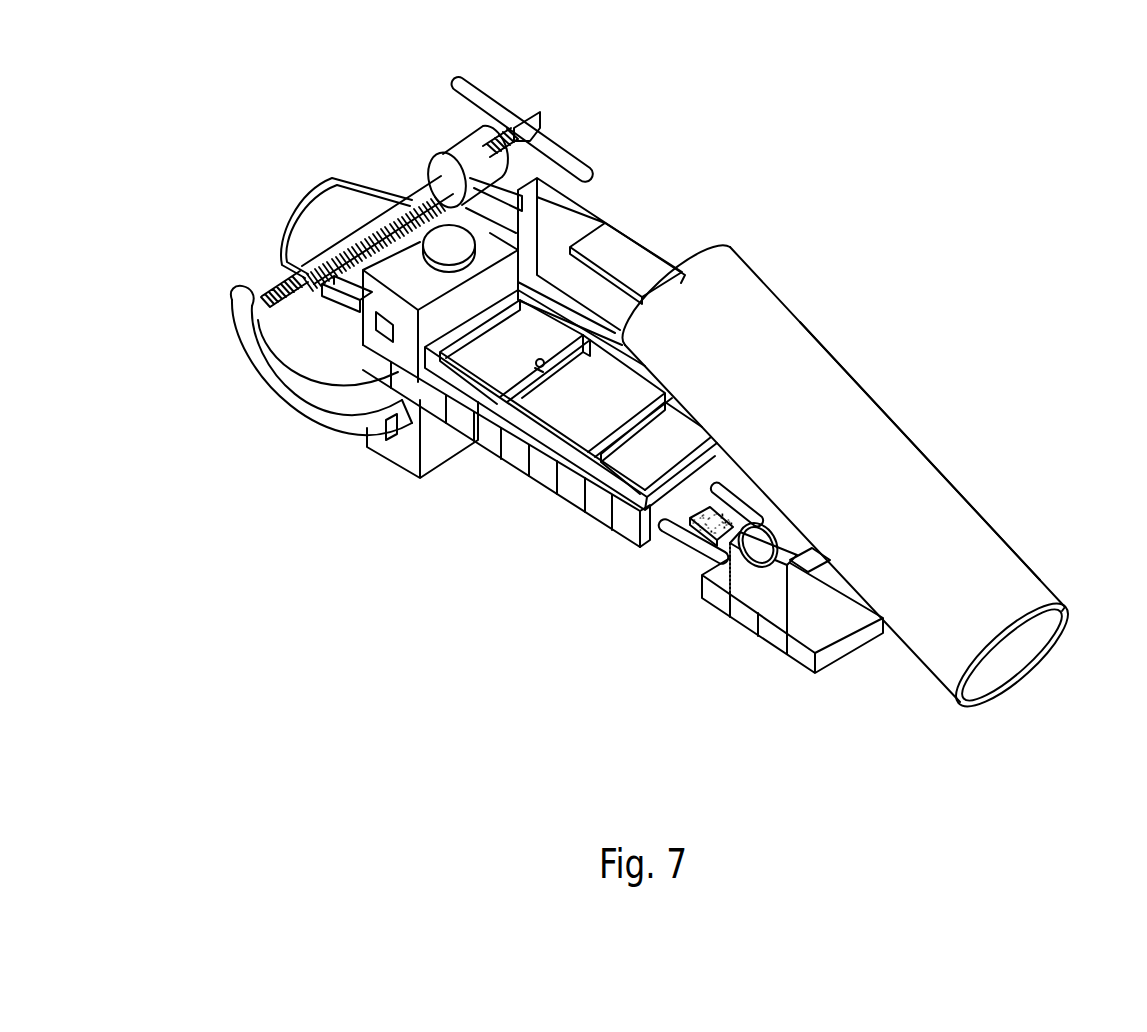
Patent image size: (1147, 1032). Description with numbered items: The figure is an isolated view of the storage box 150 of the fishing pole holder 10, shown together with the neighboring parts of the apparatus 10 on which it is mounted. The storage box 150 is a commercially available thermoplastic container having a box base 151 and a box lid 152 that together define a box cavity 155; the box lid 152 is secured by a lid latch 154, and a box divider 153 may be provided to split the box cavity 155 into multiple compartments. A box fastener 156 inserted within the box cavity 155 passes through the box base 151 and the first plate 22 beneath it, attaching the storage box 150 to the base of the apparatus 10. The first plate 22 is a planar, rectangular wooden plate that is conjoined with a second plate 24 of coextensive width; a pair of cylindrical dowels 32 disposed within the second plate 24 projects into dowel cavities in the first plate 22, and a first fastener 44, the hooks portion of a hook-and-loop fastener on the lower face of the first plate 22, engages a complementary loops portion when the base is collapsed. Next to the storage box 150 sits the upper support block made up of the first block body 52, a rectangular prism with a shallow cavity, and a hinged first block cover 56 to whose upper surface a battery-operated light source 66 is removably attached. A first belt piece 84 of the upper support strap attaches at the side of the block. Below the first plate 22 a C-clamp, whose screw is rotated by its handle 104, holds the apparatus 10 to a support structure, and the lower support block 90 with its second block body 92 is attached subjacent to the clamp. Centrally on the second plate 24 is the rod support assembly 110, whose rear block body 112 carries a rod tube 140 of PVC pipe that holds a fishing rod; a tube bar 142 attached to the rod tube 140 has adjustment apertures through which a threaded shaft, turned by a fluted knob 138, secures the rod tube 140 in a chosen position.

The fishing pole holder 10 is at (820, 151).
The first plate 22 is at (650, 553).
The second plate 24 is at (850, 640).
The cylindrical dowels 32 is at (702, 550).
The first fastener 44 is at (697, 535).
The first block body 52 is at (377, 337).
The first block cover 56 is at (470, 223).
The light source 66 is at (420, 197).
The first belt piece 84 is at (393, 433).
The lower support block 90 is at (408, 507).
The second block body 92 is at (407, 460).
The handle 104 is at (567, 152).
The rod support assembly 110 is at (930, 419).
The rear block body 112 is at (793, 613).
The knob 138 is at (755, 553).
The rod tube 140 is at (937, 502).
The tube bar 142 is at (992, 690).
The storage box 150 is at (596, 552).
The box base 151 is at (623, 533).
The box lid 152 is at (623, 220).
The box divider 153 is at (533, 380).
The lid latch 154 is at (607, 262).
The box cavity 155 is at (595, 403).
The box fastener 156 is at (527, 377).